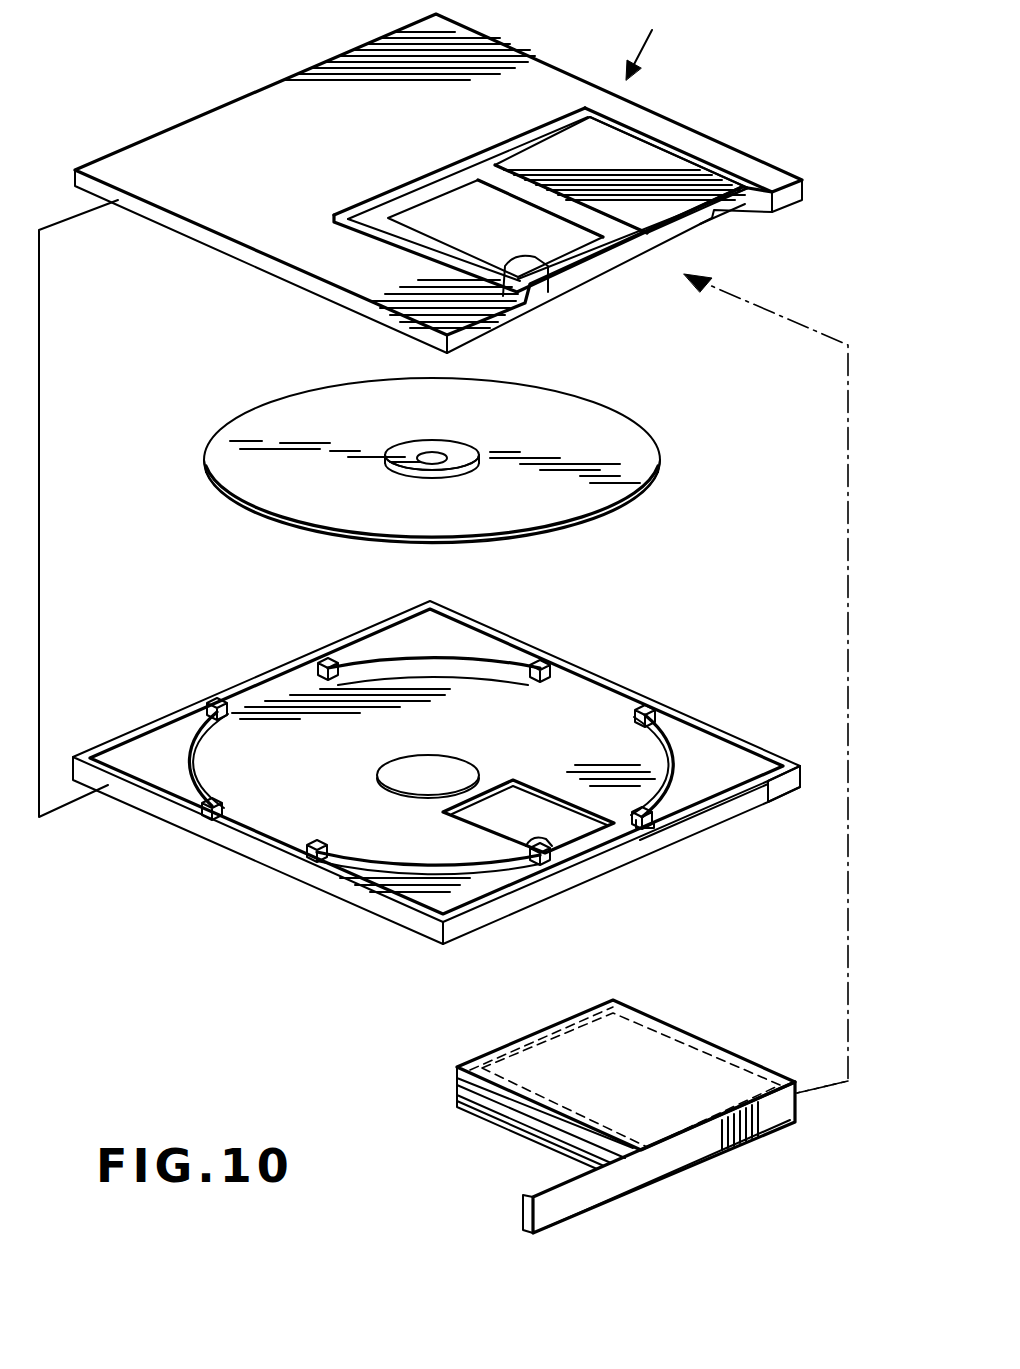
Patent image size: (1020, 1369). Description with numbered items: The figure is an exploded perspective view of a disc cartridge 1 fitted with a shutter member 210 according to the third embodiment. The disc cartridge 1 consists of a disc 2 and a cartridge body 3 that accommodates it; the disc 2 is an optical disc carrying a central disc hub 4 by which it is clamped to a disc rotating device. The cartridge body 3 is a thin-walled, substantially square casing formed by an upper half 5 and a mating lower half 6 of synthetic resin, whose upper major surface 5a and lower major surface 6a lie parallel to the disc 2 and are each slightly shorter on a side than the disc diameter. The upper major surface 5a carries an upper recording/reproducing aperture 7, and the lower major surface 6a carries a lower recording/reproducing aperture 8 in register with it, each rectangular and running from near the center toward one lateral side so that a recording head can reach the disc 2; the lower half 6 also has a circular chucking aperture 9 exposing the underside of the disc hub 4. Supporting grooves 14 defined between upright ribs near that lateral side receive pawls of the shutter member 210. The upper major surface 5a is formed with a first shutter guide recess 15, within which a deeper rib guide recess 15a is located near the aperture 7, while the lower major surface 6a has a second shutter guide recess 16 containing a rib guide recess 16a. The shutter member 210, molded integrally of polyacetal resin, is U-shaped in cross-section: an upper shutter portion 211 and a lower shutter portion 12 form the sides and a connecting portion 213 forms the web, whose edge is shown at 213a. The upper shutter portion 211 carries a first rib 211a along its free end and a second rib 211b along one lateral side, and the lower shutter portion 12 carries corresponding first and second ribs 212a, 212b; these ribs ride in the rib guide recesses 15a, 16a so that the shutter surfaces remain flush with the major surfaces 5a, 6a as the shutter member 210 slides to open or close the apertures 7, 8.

The disc cartridge 1 is at (737, 547).
The disc 2 is at (636, 455).
The cartridge body 3 is at (42, 530).
The disc hub 4 is at (462, 452).
The upper half 5 is at (527, 55).
The upper major surface 5a is at (240, 128).
The lower half 6 is at (207, 828).
The lower major surface 6a is at (300, 886).
The upper recording/reproducing aperture 7 is at (548, 268).
The lower recording/reproducing aperture 8 is at (553, 870).
The chucking aperture 9 is at (467, 775).
The lower shutter portion 12 is at (593, 1136).
The supporting groove 14 is at (690, 225).
The first shutter guide recess 15 is at (690, 145).
The rib guide recess 15a is at (430, 190).
The second shutter guide recess 16 is at (765, 800).
The rib guide recess 16a is at (655, 830).
The shutter member 210 is at (738, 1020).
The upper shutter portion 211 is at (660, 1055).
The first rib 211a is at (527, 1045).
The second rib 211b is at (557, 1120).
The first rib 212a is at (480, 1092).
The second rib 212b is at (497, 1110).
The connecting portion 213 is at (703, 1148).
The lower edge of connecting wall 213a is at (600, 1193).